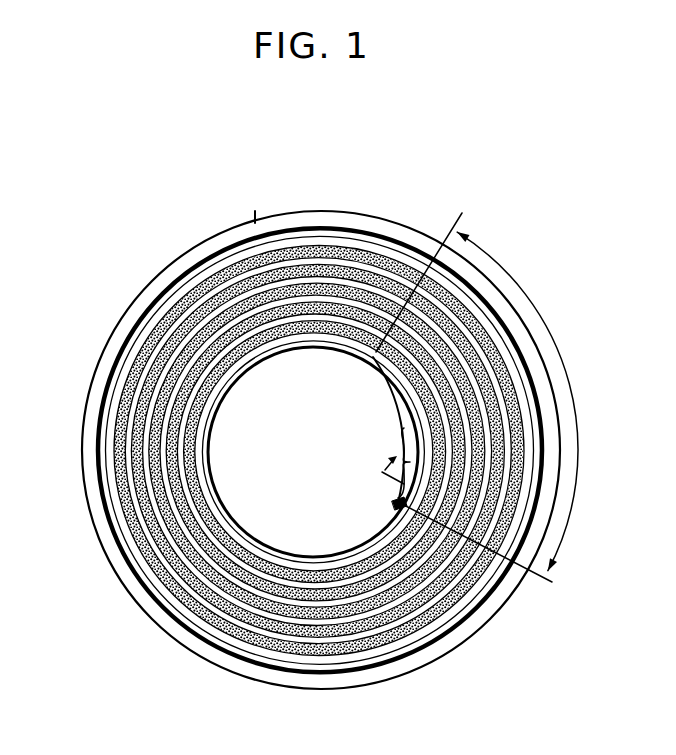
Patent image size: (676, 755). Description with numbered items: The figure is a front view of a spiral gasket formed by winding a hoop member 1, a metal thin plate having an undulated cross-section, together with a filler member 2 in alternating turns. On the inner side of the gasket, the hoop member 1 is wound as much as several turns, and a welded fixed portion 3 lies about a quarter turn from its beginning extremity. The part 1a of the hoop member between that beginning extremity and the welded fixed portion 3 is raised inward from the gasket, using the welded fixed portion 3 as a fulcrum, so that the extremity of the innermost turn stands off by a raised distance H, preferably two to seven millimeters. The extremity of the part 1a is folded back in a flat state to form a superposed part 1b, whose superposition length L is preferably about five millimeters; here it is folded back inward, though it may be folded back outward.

The hoop member 1 is at (196, 262).
The filler member 2 is at (143, 343).
The welded fixed portion 3 is at (373, 358).
The part of the hoop member 1a is at (387, 459).
The superposed part 1b is at (373, 503).
The superposition length L is at (472, 397).
The raised distance H is at (388, 529).